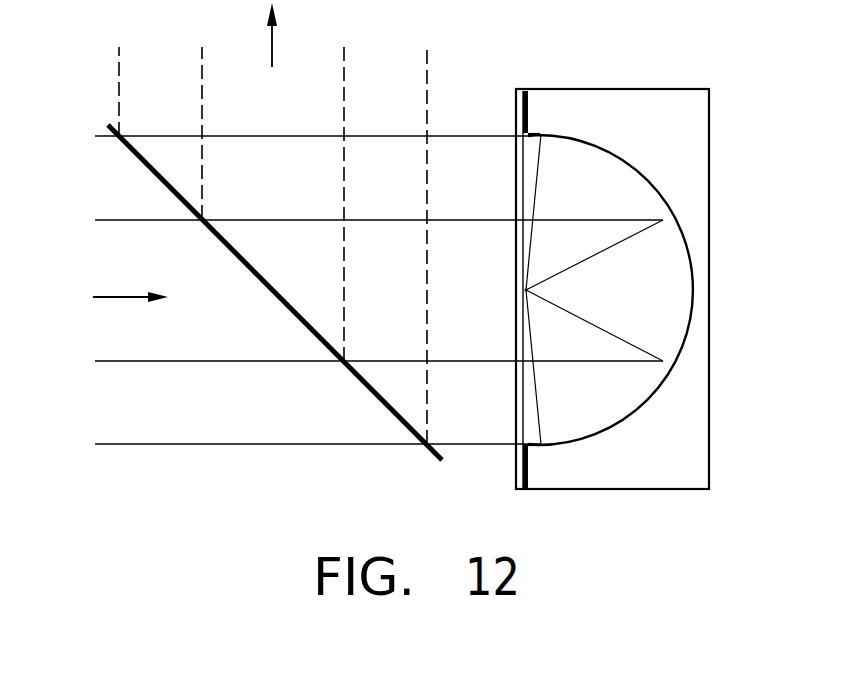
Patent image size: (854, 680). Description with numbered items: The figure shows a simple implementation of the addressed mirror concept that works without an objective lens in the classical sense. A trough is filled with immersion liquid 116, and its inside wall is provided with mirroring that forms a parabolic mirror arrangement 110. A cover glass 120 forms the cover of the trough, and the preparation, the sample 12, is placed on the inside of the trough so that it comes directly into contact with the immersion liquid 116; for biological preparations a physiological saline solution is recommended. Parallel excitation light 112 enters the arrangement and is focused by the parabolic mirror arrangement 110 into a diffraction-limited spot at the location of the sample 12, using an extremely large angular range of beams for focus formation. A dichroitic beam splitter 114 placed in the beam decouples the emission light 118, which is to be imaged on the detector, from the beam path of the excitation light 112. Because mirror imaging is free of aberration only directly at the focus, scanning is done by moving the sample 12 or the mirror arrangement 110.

The sample 12 is at (527, 291).
The parabolic mirror arrangement 110 is at (682, 300).
The parallel excitation light 112 is at (105, 298).
The dichroitic beam splitter 114 is at (437, 457).
The immersion liquid 116 is at (567, 157).
The emission light 118 is at (272, 53).
The cover glass 120 is at (521, 490).